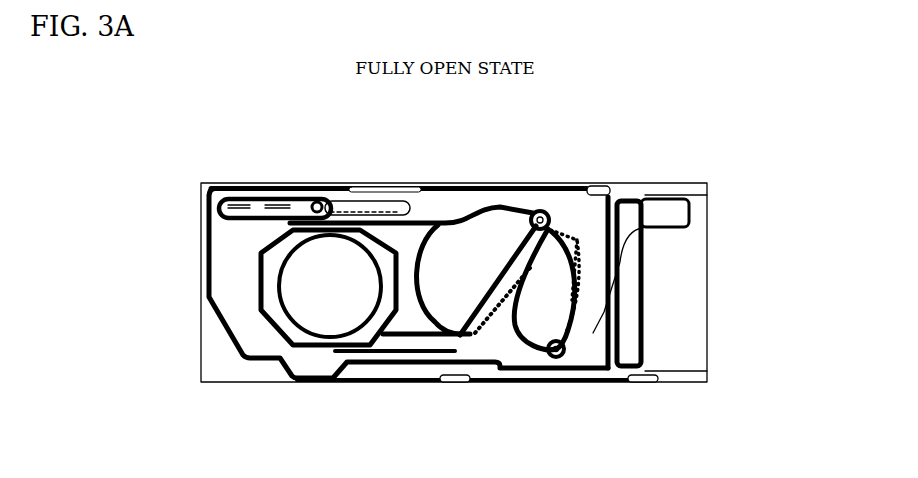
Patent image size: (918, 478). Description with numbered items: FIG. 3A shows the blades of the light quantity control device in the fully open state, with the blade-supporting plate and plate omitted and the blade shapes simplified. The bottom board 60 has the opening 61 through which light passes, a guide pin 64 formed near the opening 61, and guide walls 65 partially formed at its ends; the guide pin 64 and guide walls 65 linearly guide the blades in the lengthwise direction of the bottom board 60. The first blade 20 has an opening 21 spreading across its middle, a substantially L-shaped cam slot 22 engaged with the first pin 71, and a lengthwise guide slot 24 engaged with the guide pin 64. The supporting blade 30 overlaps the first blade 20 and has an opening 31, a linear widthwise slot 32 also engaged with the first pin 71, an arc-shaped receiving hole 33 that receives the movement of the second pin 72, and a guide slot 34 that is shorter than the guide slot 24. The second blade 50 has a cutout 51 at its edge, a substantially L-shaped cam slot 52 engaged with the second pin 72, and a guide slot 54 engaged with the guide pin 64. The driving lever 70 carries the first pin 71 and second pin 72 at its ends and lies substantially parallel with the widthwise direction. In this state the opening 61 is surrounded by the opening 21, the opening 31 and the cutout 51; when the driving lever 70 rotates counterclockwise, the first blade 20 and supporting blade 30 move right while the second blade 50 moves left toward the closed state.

The first blade 20 is at (226, 297).
The opening 21 is at (470, 225).
The slot 22 is at (520, 347).
The guide slot 24 is at (218, 206).
The supporting blade 30 is at (627, 340).
The opening 31 is at (398, 248).
The slot 32 is at (583, 300).
The receiving hole 33 is at (500, 225).
The guide slot 34 is at (287, 197).
The second blade 50 is at (690, 185).
The cutout 51 is at (378, 322).
The slot 52 is at (585, 235).
The guide slot 54 is at (383, 197).
The bottom board 60 is at (708, 243).
The opening 61 is at (305, 335).
The guide pin 64 is at (325, 197).
The guide walls 65 is at (655, 185).
The driving lever 70 is at (530, 340).
The first pin 71 is at (550, 352).
The second pin 72 is at (552, 226).